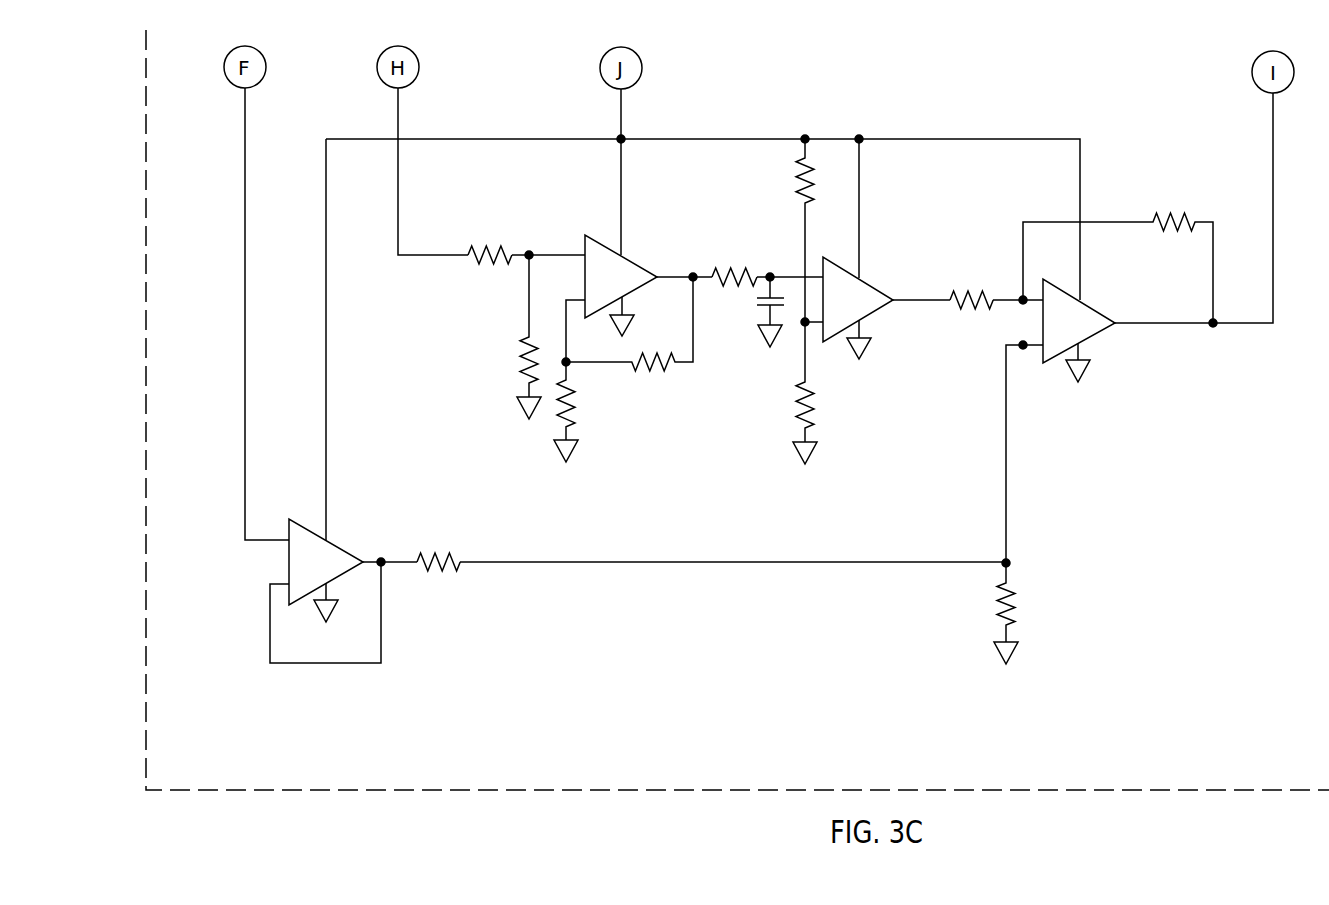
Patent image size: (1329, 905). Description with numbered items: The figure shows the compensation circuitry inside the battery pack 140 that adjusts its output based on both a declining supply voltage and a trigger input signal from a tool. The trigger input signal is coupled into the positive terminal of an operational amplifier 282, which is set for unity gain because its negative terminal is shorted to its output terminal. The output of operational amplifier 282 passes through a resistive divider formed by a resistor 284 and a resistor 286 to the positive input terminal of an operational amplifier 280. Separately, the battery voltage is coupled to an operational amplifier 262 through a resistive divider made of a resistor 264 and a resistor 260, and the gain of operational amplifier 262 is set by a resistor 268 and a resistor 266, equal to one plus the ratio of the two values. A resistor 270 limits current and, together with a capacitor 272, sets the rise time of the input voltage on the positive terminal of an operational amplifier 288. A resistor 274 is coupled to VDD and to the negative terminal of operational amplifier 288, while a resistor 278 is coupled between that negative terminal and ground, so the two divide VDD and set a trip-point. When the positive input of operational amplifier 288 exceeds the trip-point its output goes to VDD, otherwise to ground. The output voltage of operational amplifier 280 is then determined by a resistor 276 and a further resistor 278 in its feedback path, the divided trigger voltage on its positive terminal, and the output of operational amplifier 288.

The battery pack 140 is at (528, 792).
The resistor 260 is at (524, 340).
The operational amplifier 262 is at (630, 257).
The resistor 264 is at (480, 246).
The resistor 266 is at (673, 372).
The resistor 268 is at (576, 385).
The resistor 270 is at (748, 272).
The capacitor 272 is at (758, 308).
The resistor 274 is at (800, 165).
The resistor 276 is at (990, 290).
The resistor 278 is at (815, 385).
The operational amplifier 280 is at (1087, 300).
The operational amplifier 282 is at (338, 541).
The resistor 284 is at (458, 556).
The resistor 286 is at (1015, 582).
The operational amplifier 288 is at (866, 276).